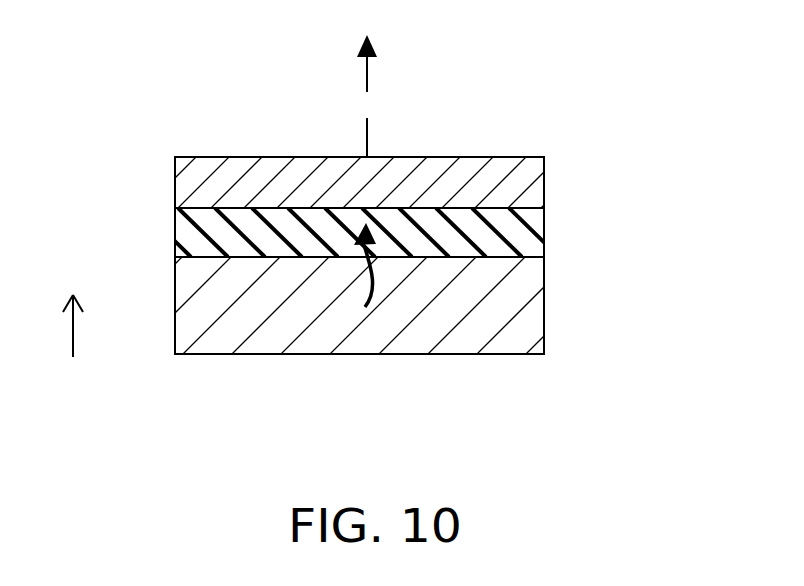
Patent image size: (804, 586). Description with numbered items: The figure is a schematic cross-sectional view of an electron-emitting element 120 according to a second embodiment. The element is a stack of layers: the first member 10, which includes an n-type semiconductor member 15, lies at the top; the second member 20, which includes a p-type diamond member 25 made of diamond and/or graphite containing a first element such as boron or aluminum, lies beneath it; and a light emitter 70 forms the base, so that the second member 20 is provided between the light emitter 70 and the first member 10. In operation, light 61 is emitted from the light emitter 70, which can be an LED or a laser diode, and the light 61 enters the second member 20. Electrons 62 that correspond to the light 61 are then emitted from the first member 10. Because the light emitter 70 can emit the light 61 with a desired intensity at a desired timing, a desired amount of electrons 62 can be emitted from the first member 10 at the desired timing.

The electron-emitting element 120 is at (582, 75).
The n-type semiconductor member 15 is at (523, 172).
The first member 10 is at (523, 193).
The second member 20 is at (508, 220).
The p-type diamond member 25 is at (520, 247).
The light emitter 70 is at (512, 308).
The light 61 is at (362, 278).
The electrons 62 is at (365, 57).